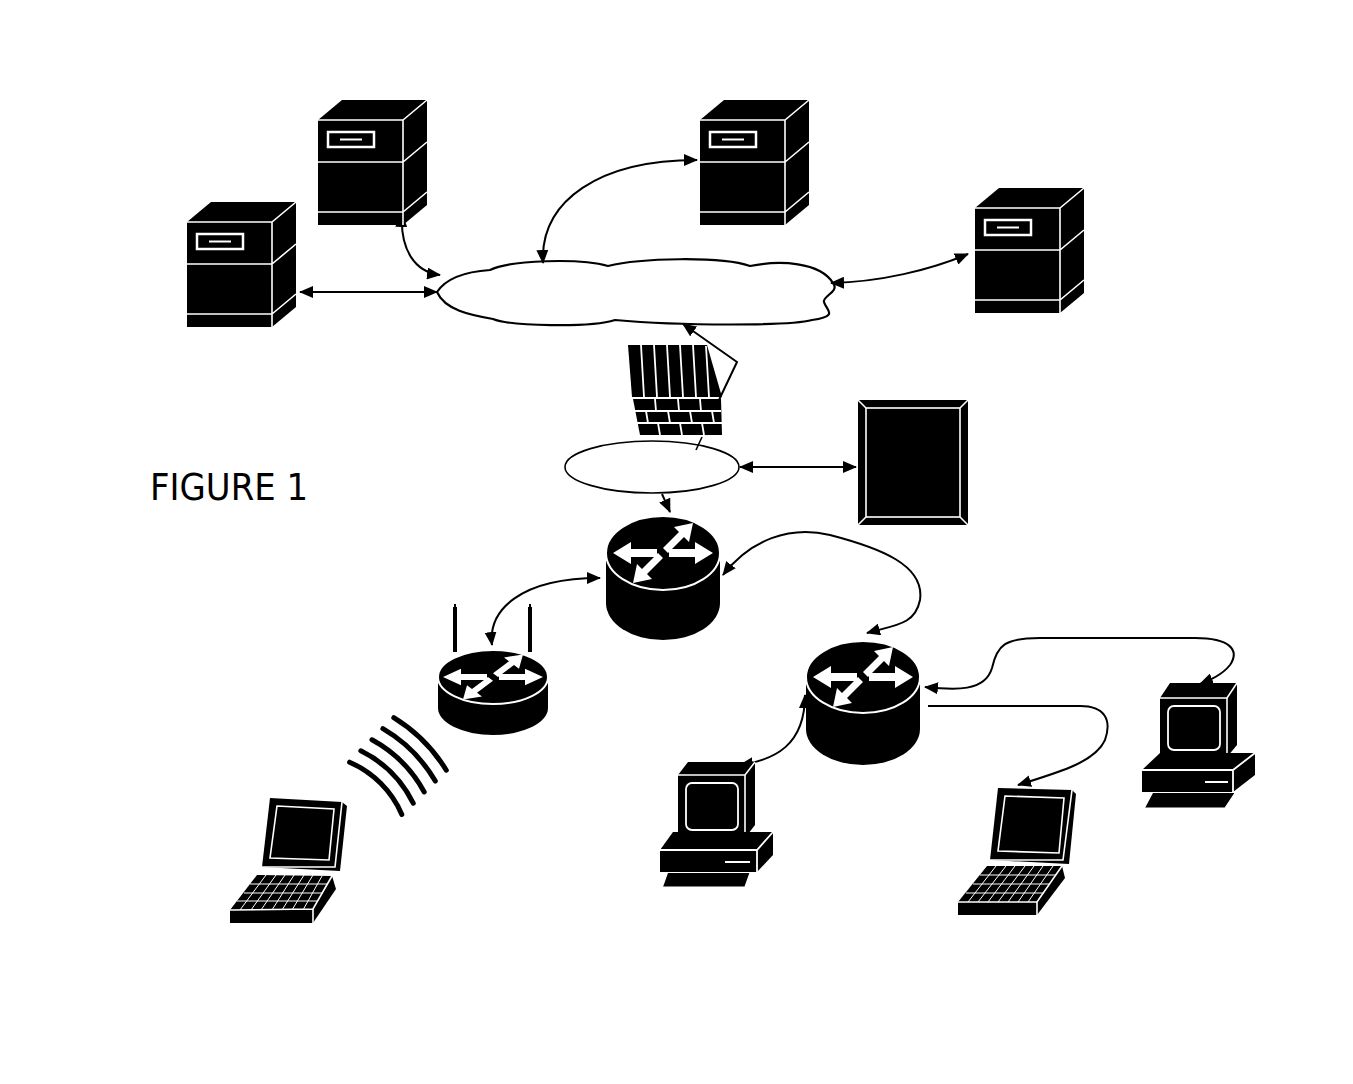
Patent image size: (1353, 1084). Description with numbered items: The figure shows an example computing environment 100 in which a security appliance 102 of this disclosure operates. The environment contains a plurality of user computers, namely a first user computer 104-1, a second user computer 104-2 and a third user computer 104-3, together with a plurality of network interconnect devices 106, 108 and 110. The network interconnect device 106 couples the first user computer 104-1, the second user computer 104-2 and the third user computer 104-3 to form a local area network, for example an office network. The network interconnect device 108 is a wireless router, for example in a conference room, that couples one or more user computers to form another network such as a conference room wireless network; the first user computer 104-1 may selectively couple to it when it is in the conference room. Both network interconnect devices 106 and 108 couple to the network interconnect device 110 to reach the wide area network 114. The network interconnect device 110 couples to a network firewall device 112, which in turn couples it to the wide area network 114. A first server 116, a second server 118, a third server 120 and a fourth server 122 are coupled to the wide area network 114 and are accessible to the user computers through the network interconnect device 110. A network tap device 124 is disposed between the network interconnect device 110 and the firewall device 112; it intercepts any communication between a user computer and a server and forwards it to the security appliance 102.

The computing environment 100 is at (933, 145).
The security appliance 102 is at (960, 401).
The first user computer 104-1 is at (330, 892).
The second user computer 104-2 is at (667, 850).
The third user computer 104-3 is at (1233, 712).
The network interconnect device 106 is at (906, 645).
The network interconnect device 108 is at (555, 680).
The network interconnect device 110 is at (707, 530).
The network firewall device 112 is at (725, 402).
The wide area network 114 is at (800, 277).
The first server 116 is at (1083, 220).
The second server 118 is at (187, 289).
The third server 120 is at (427, 122).
The fourth server 122 is at (808, 132).
The network tap device 124 is at (722, 456).